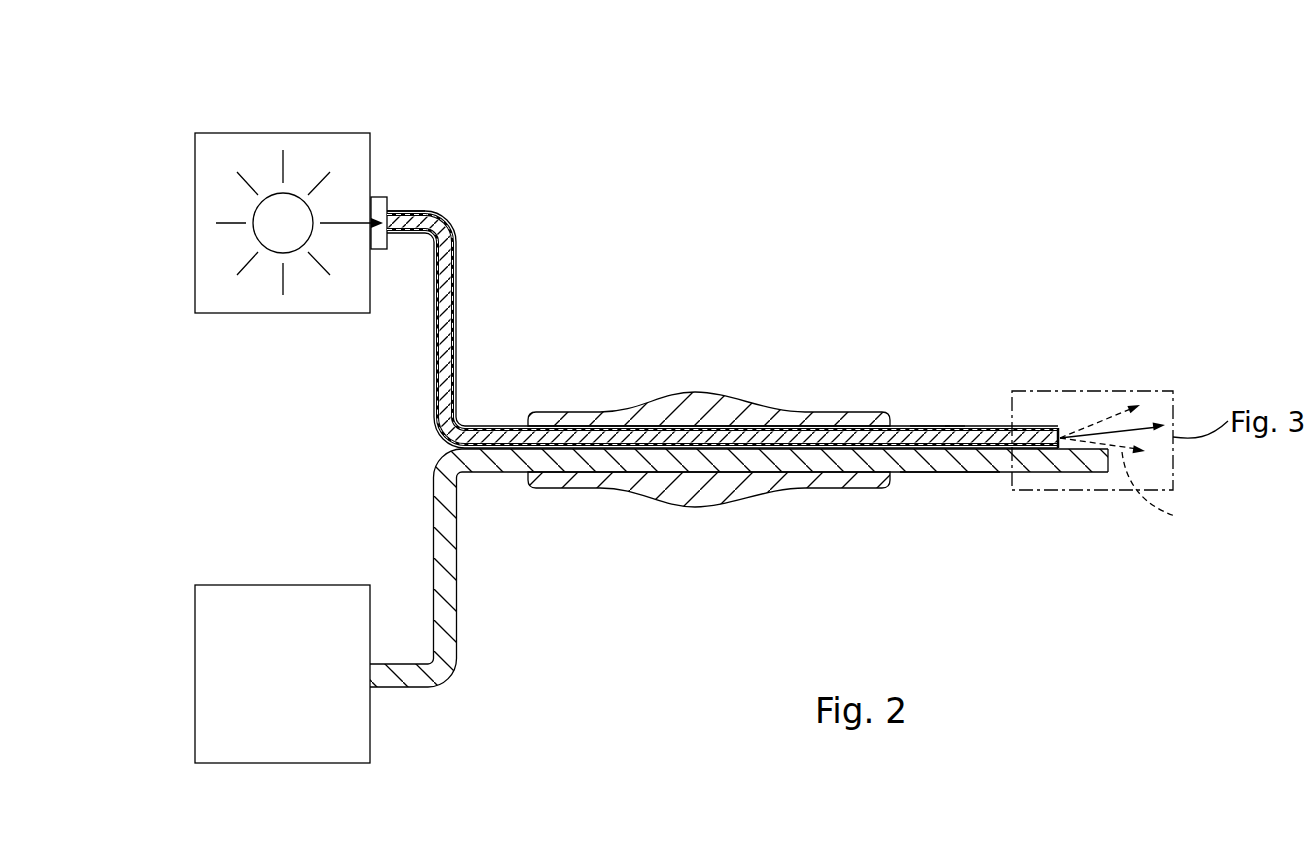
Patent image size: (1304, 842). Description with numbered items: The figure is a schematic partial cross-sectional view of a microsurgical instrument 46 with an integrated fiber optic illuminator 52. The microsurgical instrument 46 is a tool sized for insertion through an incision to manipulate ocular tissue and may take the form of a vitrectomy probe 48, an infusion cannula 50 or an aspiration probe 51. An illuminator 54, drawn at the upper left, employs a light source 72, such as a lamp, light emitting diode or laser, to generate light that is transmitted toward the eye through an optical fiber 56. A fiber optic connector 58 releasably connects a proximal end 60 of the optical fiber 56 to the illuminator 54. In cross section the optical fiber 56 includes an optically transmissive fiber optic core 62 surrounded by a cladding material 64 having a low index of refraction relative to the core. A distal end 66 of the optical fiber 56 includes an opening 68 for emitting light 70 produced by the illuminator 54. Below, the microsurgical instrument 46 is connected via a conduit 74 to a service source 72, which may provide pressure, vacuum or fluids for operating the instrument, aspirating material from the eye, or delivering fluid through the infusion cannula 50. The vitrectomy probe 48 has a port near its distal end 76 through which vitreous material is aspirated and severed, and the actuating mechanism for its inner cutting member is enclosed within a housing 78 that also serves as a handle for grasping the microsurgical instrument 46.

The microsurgical instrument 46 is at (696, 522).
The vitrectomy probe 48 is at (911, 504).
The infusion cannula 50 is at (911, 504).
The aspiration probe 51 is at (952, 472).
The fiber optic illuminator 52 is at (955, 427).
The illuminator 54 is at (358, 120).
The optical fiber 56 is at (457, 303).
The fiber optic connector 58 is at (382, 197).
The proximal end 60 is at (407, 211).
The fiber optic core 62 is at (920, 427).
The cladding material 64 is at (940, 427).
The distal end 66 is at (1035, 427).
The opening 68 is at (1065, 437).
The light 70 is at (1167, 493).
The light source 72 is at (257, 207).
The conduit 74 is at (457, 590).
The distal end 76 is at (1065, 473).
The housing 78 is at (733, 393).